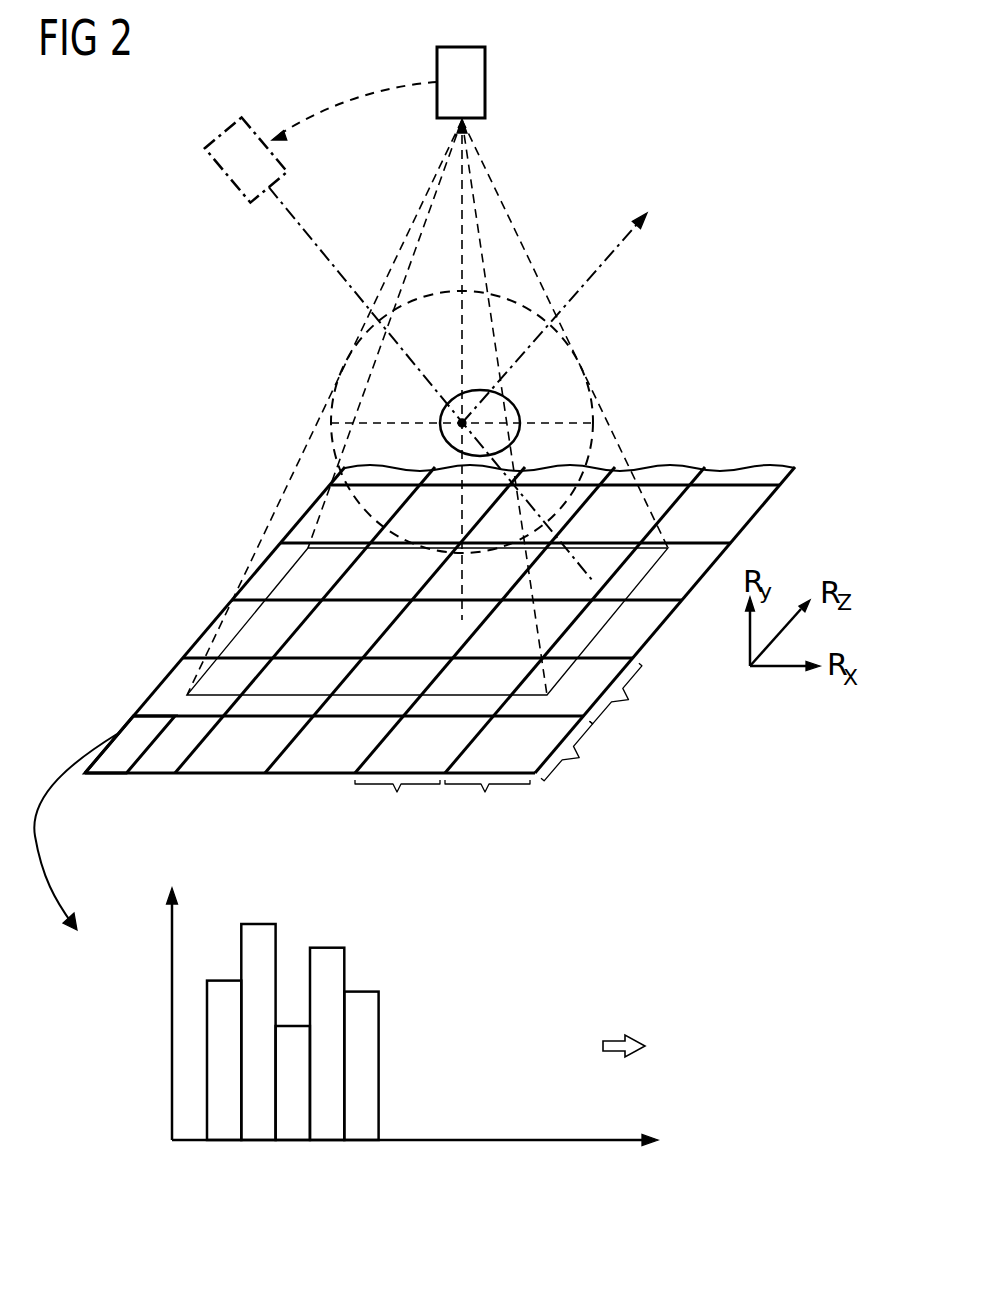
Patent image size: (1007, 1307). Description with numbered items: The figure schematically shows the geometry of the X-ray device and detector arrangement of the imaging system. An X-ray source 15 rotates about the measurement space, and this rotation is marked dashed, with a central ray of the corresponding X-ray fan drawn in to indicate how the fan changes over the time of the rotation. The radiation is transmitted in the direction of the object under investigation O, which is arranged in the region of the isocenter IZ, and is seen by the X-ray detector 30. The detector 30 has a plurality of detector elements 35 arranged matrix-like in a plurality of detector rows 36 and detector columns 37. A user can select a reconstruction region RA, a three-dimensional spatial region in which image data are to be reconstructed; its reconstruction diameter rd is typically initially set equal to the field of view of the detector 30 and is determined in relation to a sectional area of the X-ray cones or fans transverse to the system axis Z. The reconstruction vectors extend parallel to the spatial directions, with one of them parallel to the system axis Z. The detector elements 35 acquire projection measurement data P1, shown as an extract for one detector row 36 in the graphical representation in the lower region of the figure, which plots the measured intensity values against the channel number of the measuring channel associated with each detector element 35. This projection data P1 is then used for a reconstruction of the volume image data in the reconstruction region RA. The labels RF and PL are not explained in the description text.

The X-ray source 15 is at (485, 80).
The X-ray detector 30 is at (756, 517).
The detector element 35 is at (163, 683).
The detector row 36 is at (601, 722).
The detector column 37 is at (442, 805).
The radiation field RF is at (489, 177).
The reconstruction region RA is at (417, 297).
The system axis Z is at (602, 262).
The object under investigation O is at (507, 396).
The reconstruction diameter rd is at (578, 420).
The isocenter IZ is at (448, 431).
The projection measurement data P1 is at (36, 836).
The profile line direction PL is at (643, 1034).